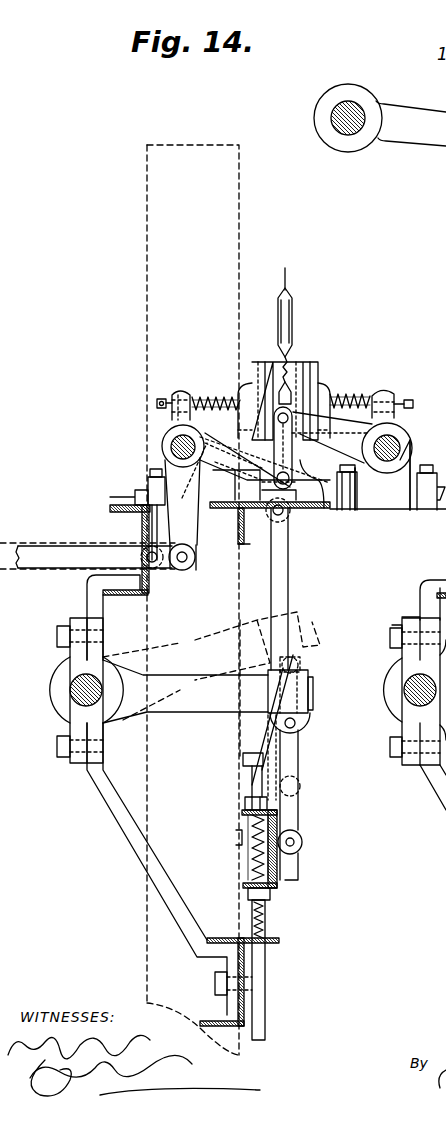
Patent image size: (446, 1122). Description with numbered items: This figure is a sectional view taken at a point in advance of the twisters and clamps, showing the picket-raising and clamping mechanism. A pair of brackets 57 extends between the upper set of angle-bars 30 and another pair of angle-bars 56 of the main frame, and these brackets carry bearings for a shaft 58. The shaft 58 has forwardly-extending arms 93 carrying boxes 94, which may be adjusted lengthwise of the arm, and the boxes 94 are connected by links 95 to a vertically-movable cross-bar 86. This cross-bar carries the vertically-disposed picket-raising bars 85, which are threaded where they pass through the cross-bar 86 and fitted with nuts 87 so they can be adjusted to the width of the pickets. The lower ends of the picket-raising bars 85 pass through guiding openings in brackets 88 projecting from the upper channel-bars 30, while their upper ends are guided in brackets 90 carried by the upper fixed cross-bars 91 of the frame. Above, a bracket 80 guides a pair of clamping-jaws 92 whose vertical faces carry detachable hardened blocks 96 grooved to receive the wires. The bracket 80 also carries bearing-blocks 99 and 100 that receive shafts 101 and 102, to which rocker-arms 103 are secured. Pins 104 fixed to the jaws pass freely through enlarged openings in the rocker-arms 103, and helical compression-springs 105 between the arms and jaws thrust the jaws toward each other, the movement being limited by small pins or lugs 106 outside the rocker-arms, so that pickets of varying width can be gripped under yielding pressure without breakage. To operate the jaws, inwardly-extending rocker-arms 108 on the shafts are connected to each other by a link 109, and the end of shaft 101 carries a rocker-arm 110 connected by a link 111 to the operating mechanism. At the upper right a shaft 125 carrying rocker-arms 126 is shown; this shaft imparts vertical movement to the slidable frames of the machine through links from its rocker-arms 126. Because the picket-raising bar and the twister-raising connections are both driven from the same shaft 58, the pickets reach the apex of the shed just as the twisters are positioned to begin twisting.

The shaft 125 is at (342, 137).
The rocker-arms 126 is at (424, 134).
The detachable blocks 96 is at (298, 368).
The helical compression-springs 105 is at (213, 398).
The inwardly-extending rocker-arms 108 is at (346, 396).
The pins 104 is at (160, 403).
The small pins or lugs 106 is at (410, 403).
The rocker-arms 103 is at (180, 415).
The shaft 102 is at (398, 443).
The shaft 101 is at (172, 447).
The rocker-arm 110 is at (197, 558).
The link 111 is at (49, 559).
The bearing-block 99 is at (150, 487).
The angle-bars 56 is at (130, 511).
The upper fixed cross-bars 91 is at (238, 517).
The bearing-block 100 is at (392, 497).
The clamping-jaws 92 is at (338, 476).
The brackets 80 is at (330, 492).
The brackets 90 is at (258, 510).
The link 109 is at (302, 509).
The picket-raising bars 85 is at (279, 568).
The brackets 57 is at (88, 602).
The shaft 58 is at (72, 693).
The forwardly-extending arms 93 is at (193, 703).
The boxes 94 is at (300, 715).
The links 95 is at (297, 766).
The nuts 87 is at (245, 803).
The vertically-movable cross-bar 86 is at (247, 887).
The angle-bars 30 is at (230, 924).
The brackets 88 is at (280, 942).